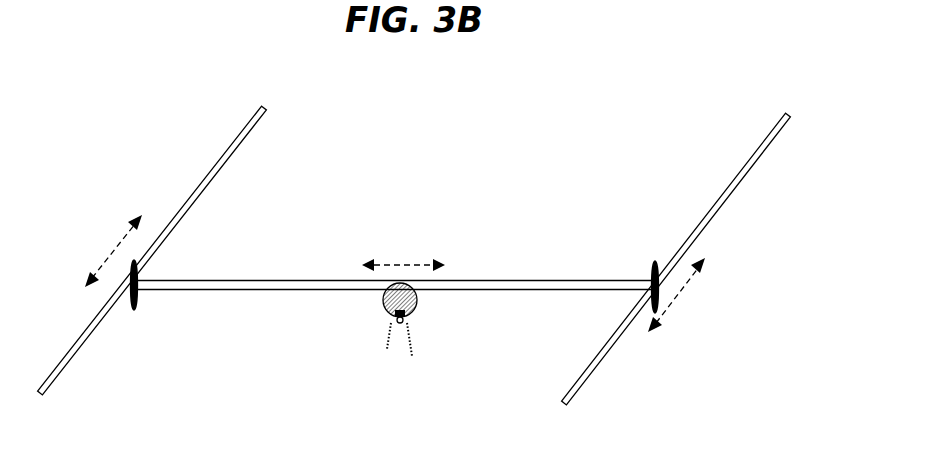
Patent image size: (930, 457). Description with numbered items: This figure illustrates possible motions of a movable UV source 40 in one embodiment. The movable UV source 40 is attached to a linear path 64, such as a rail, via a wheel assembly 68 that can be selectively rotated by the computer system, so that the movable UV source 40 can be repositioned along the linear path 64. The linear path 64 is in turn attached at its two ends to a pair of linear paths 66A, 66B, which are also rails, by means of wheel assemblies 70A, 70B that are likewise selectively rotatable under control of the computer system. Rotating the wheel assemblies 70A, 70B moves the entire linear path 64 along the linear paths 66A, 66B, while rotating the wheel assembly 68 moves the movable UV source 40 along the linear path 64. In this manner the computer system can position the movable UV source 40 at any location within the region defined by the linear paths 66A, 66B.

The linear path 66A is at (222, 162).
The linear path 66B is at (724, 195).
The wheel assembly 70A is at (134, 310).
The wheel assembly 70B is at (653, 262).
The linear path 64 is at (297, 281).
The wheel assembly 68 is at (383, 304).
The movable UV source 40 is at (401, 343).